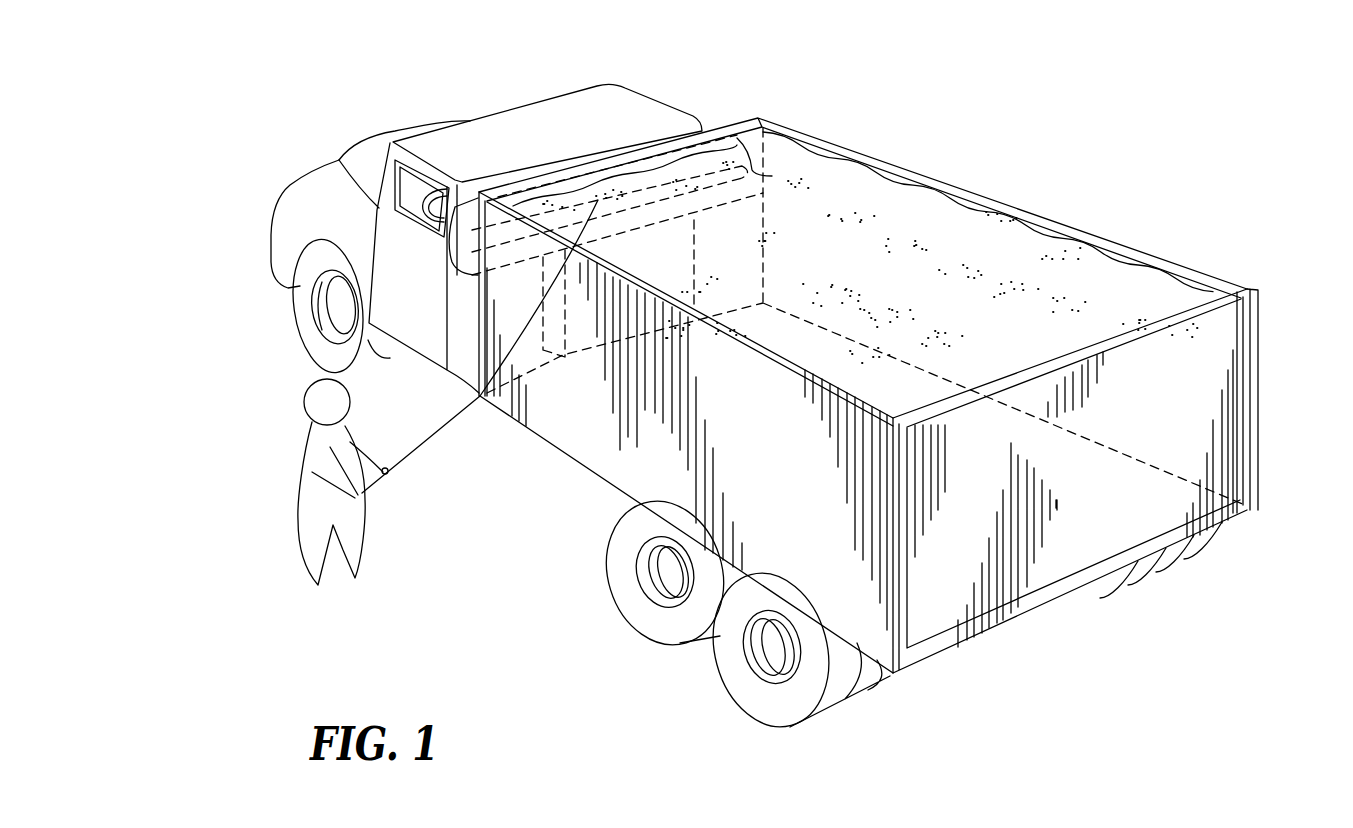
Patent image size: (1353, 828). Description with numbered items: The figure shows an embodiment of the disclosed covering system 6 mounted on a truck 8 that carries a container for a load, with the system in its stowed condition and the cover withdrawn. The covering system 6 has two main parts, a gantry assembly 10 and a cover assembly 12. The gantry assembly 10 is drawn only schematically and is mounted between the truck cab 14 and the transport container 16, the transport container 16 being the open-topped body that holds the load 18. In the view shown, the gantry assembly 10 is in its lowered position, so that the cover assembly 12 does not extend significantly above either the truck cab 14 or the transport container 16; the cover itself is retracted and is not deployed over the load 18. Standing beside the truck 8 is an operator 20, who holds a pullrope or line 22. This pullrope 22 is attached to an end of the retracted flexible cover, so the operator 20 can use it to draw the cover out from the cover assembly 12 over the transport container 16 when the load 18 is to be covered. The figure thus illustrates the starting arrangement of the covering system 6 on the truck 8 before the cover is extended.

The covering system 6 is at (705, 238).
The truck 8 is at (706, 88).
The gantry assembly 10 is at (503, 293).
The cover assembly 12 is at (766, 177).
The truck cab 14 is at (576, 92).
The transport container 16 is at (1210, 413).
The load 18 is at (1033, 257).
The operator 20 is at (305, 403).
The pullrope 22 is at (462, 427).